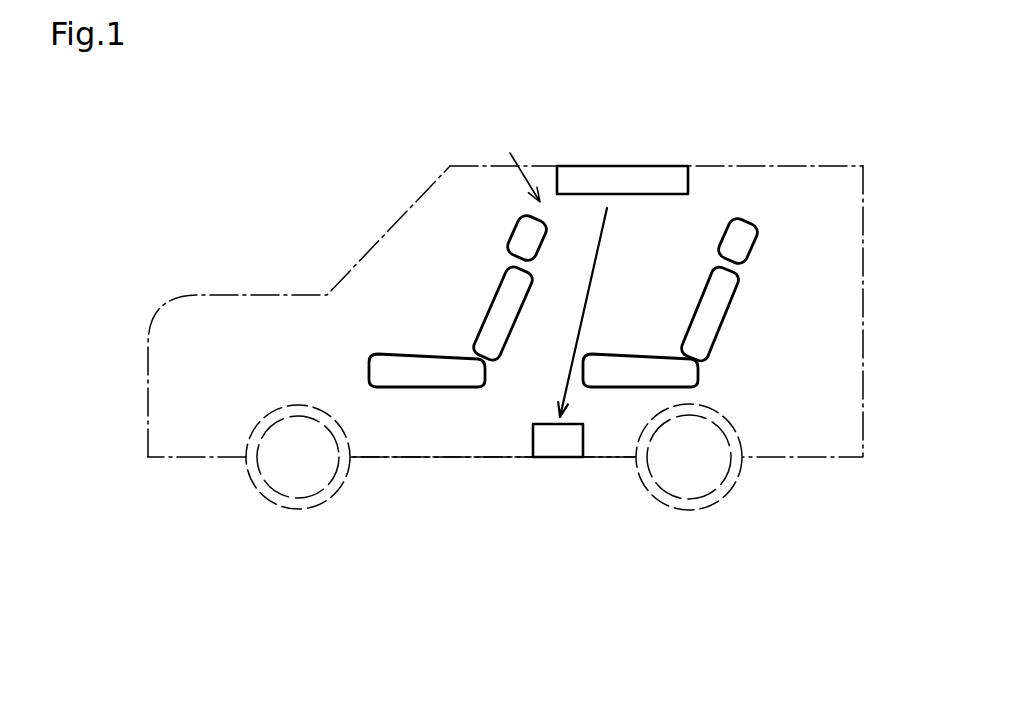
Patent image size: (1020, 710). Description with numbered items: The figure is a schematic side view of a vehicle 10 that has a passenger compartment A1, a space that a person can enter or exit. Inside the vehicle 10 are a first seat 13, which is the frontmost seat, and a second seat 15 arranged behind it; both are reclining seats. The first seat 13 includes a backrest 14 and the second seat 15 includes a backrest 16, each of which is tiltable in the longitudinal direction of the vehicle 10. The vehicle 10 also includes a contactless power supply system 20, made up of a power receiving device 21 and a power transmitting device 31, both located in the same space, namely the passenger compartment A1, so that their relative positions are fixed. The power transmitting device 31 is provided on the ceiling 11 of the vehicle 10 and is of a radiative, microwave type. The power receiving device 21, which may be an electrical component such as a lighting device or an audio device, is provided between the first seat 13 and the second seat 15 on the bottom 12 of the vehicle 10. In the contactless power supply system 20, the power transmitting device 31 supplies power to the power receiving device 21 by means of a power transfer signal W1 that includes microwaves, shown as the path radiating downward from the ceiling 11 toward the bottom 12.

The vehicle 10 is at (863, 222).
The ceiling 11 is at (765, 166).
The bottom 12 is at (458, 457).
The first seat 13 is at (396, 354).
The backrest 14 is at (492, 267).
The second seat 15 is at (609, 352).
The backrest 16 is at (707, 266).
The contactless power supply system 20 is at (516, 162).
The power receiving device 21 is at (560, 447).
The power transmitting device 31 is at (620, 166).
The power transfer signal W1 is at (576, 329).
The passenger compartment A1 is at (651, 232).